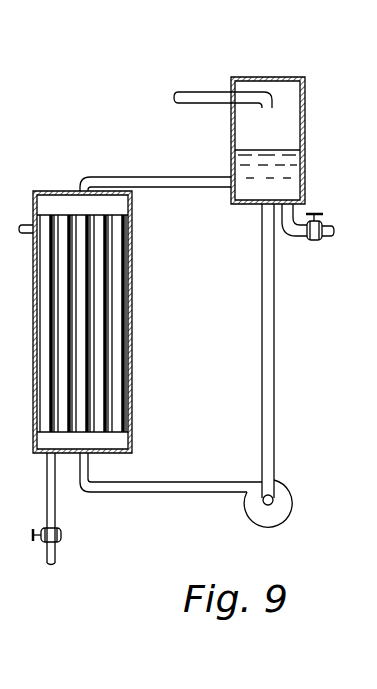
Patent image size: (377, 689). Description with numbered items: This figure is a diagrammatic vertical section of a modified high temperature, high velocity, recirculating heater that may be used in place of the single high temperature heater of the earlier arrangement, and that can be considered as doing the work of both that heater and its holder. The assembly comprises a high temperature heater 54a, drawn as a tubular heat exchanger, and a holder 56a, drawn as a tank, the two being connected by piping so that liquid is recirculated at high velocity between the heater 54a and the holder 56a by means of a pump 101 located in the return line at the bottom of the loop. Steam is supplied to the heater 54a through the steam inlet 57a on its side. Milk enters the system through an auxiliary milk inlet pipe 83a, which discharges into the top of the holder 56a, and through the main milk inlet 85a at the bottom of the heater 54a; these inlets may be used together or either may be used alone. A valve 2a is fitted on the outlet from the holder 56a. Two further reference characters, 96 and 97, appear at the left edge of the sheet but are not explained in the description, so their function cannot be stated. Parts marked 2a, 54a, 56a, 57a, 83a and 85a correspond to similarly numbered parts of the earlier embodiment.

The high temperature heater 54a is at (133, 306).
The holder 56a is at (327, 65).
The steam inlet 57a is at (22, 236).
The auxiliary milk inlet pipe 83a is at (200, 92).
The valve 2a is at (330, 237).
The main milk inlet 85a is at (56, 513).
The pump 101 is at (249, 506).
The conduit 96 is at (3, 142).
The conduit 97 is at (4, 167).